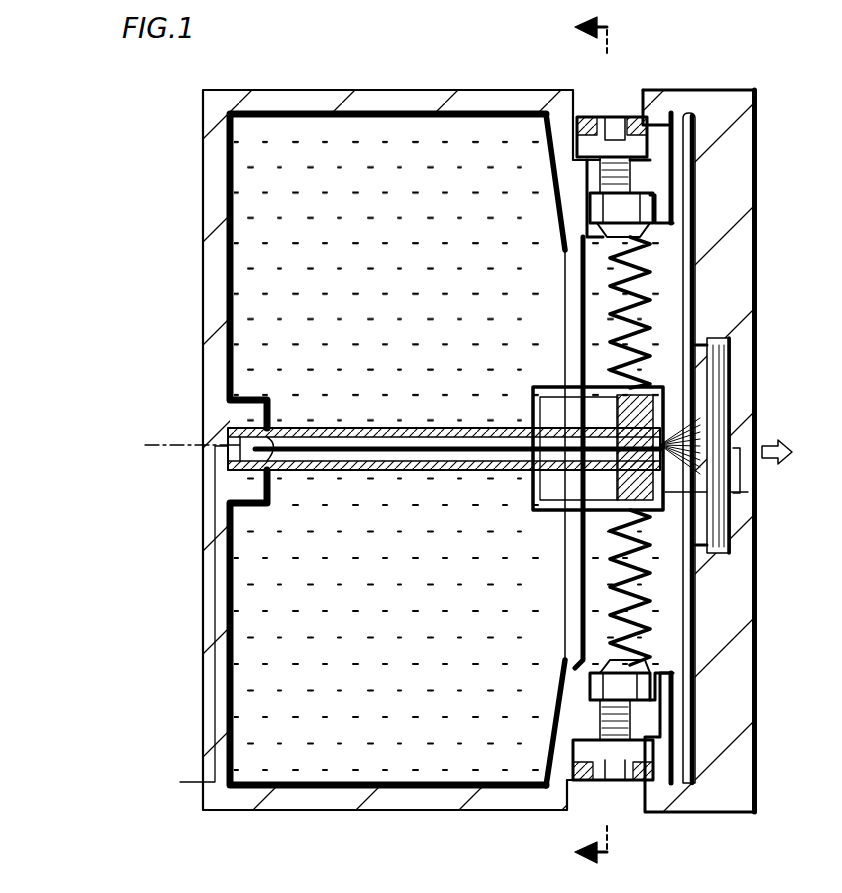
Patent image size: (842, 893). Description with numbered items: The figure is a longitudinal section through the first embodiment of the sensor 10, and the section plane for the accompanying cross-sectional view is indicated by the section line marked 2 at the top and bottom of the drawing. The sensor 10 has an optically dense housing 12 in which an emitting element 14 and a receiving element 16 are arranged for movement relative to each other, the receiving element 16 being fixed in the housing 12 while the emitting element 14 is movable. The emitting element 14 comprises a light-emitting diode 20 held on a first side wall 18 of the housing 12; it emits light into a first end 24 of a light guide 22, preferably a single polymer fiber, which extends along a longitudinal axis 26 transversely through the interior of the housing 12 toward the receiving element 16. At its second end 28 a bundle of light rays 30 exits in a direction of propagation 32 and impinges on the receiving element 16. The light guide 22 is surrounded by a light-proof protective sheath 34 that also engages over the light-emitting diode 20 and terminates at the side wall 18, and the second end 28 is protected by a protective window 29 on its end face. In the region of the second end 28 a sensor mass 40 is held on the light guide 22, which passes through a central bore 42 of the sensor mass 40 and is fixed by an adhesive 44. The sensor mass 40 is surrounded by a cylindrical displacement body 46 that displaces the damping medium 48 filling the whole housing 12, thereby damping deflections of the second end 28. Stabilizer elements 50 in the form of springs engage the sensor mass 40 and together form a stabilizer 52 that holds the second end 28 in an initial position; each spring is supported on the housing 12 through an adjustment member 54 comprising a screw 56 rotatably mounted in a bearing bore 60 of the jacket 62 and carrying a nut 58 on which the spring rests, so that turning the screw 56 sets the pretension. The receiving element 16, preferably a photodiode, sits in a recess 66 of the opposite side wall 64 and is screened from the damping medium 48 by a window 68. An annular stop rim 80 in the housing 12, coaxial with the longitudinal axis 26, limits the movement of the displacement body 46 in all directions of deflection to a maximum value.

The sensor 10 is at (200, 140).
The housing 12 is at (313, 90).
The emitting element 14 is at (308, 388).
The receiving element 16 is at (723, 315).
The first side wall 18 is at (215, 300).
The light-emitting diode 20 is at (240, 440).
The light guide 22 is at (415, 432).
The first end 24 is at (285, 480).
The longitudinal axis 26 is at (440, 472).
The second end 28 is at (662, 395).
The protective window 29 is at (700, 440).
The bundle of light rays 30 is at (727, 368).
The direction of propagation 32 is at (785, 452).
The protective sheath 34 is at (350, 472).
The sensor mass 40 is at (700, 492).
The central bore 42 is at (618, 388).
The adhesive 44 is at (548, 405).
The displacement body 46 is at (550, 512).
The damping medium 48 is at (262, 690).
The stabilizer element 50 is at (625, 272).
The stabilizer 52 is at (664, 252).
The adjustment member 54 is at (627, 118).
The screw 56 is at (700, 140).
The nut 58 is at (598, 226).
The bearing bore 60 is at (598, 186).
The jacket 62 is at (548, 110).
The side wall 64 is at (715, 735).
The recess 66 is at (742, 582).
The window 68 is at (690, 128).
The annular stop rim 80 is at (590, 265).
The section line 2- 2 is at (602, 446).